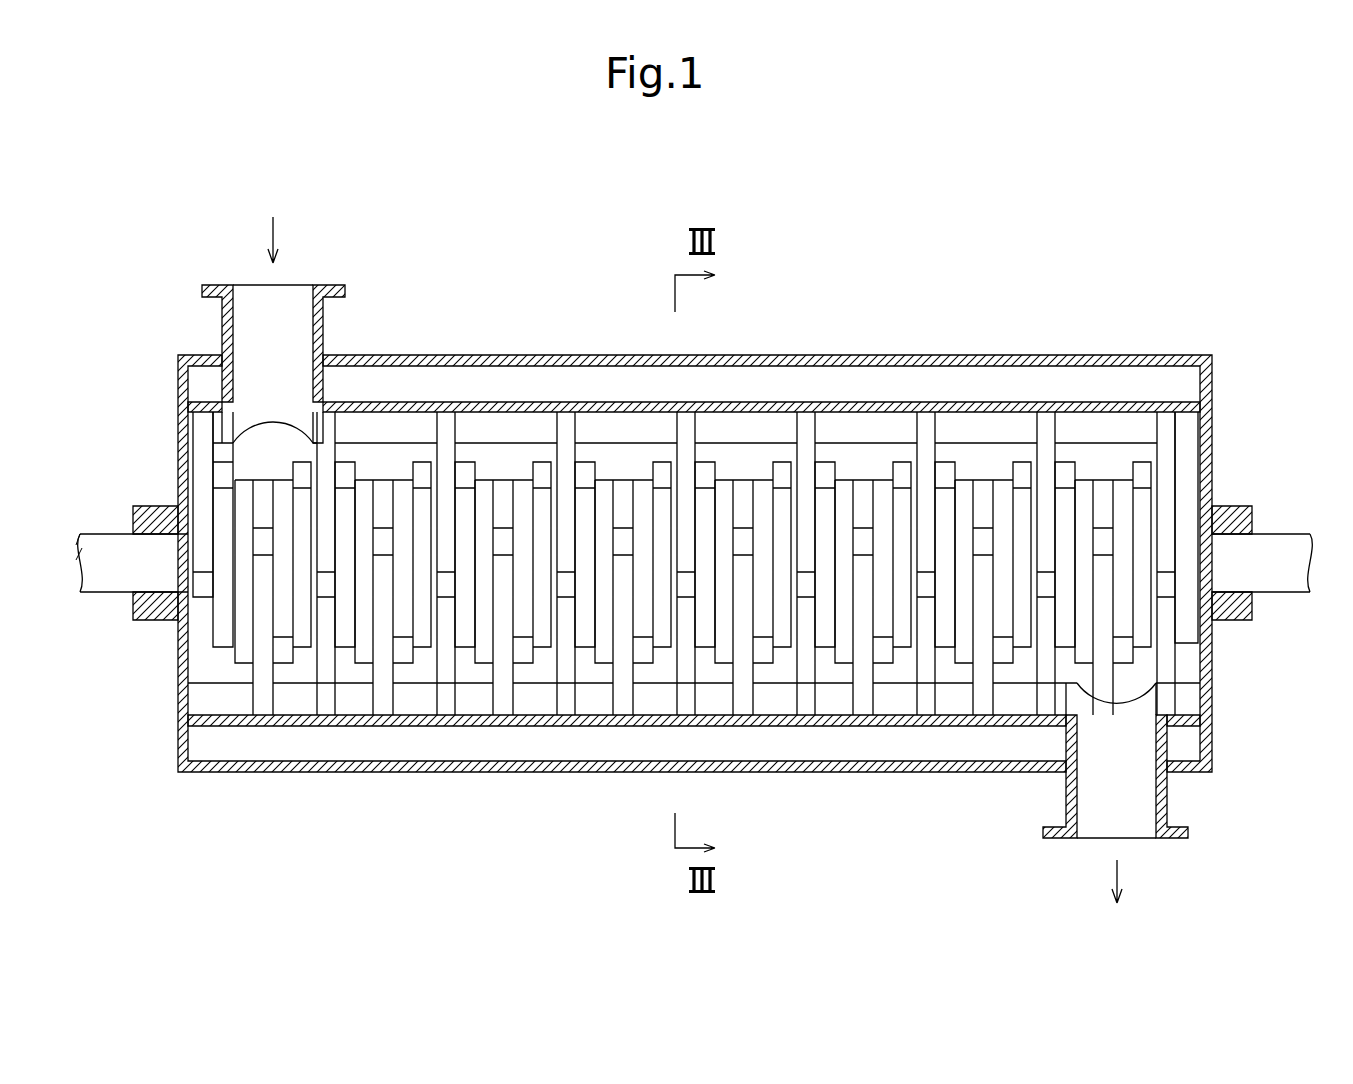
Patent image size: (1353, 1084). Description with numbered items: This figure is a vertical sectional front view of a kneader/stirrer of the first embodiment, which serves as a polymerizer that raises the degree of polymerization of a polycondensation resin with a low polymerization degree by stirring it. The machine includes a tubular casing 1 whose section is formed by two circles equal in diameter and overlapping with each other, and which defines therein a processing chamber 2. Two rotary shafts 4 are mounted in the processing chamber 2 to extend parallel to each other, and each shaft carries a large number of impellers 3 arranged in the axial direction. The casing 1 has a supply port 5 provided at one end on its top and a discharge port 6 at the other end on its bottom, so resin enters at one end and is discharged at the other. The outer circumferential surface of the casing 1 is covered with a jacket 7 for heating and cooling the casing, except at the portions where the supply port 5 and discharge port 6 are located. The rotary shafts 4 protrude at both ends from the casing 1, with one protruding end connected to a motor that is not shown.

The tubular casing 1 is at (1161, 345).
The processing chamber 2 is at (1023, 427).
The impellers 3 is at (423, 470).
The rotary shafts 4 is at (110, 545).
The supply port 5 is at (222, 332).
The discharge port 6 is at (1165, 800).
The jacket 7 is at (852, 362).